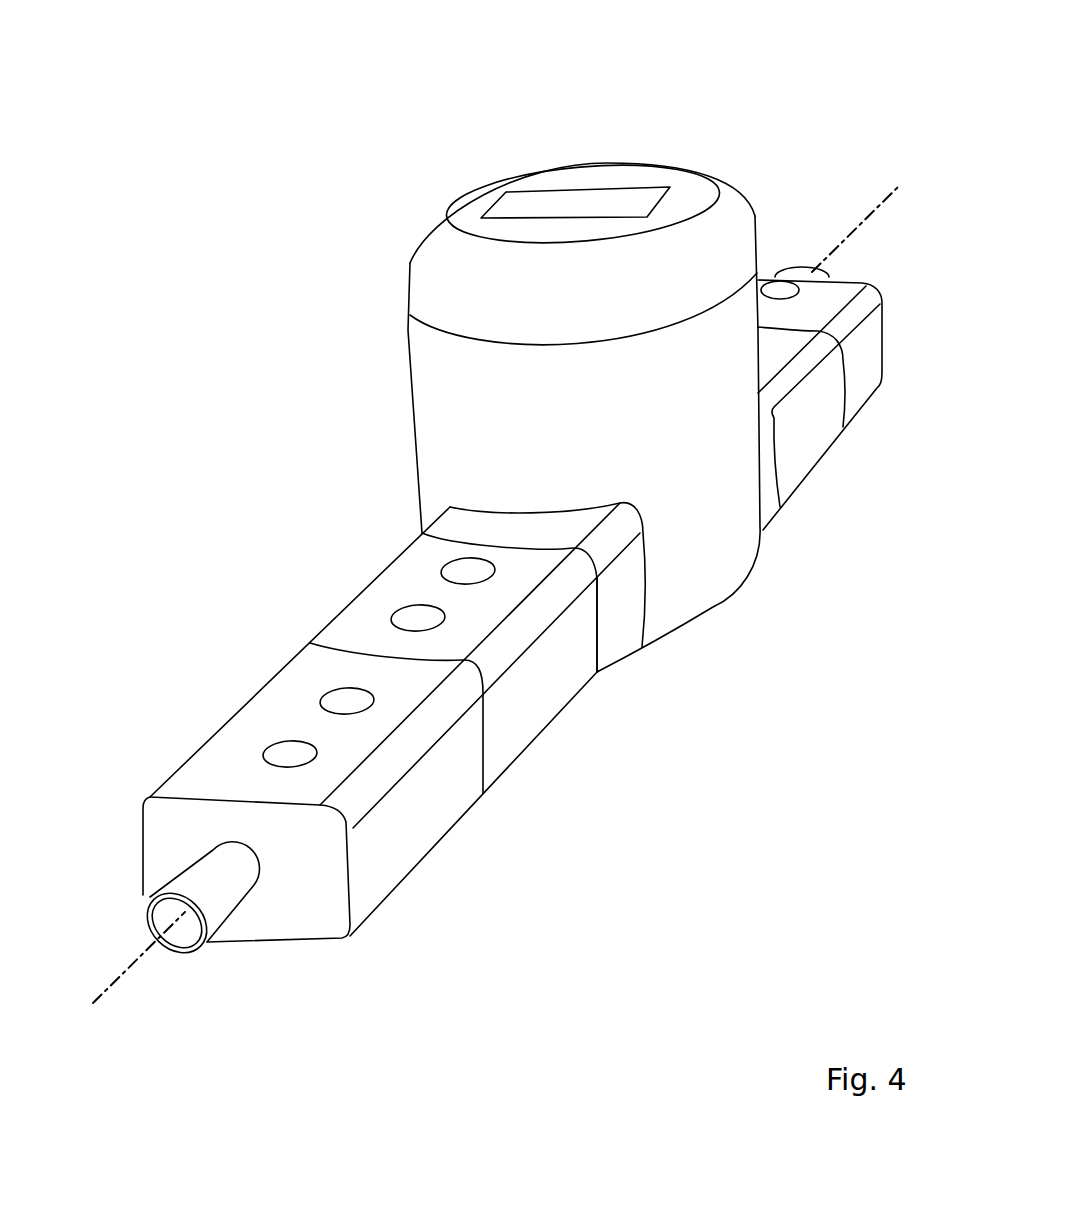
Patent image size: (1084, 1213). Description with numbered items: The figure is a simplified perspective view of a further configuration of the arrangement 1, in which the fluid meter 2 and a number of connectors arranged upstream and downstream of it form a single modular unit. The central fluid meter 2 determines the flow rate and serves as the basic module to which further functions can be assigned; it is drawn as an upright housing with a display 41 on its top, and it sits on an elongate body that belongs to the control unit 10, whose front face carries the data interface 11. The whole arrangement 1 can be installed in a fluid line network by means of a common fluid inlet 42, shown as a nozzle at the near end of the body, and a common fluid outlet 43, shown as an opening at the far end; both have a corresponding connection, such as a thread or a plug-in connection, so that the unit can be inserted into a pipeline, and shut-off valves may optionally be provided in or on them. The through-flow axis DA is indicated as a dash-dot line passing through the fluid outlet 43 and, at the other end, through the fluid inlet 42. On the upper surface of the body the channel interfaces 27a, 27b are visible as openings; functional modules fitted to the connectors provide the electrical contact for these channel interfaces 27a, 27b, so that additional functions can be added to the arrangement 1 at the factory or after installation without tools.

The arrangement 1 is at (504, 22).
The fluid meter 2 is at (394, 232).
The control unit 10 is at (612, 724).
The data interface 11 is at (507, 755).
The channel interface 27a is at (416, 616).
The channel interface 27b is at (466, 570).
The display 41 is at (534, 204).
The fluid inlet 42 is at (176, 935).
The fluid outlet 43 is at (800, 276).
The through-flow axis DA is at (860, 217).